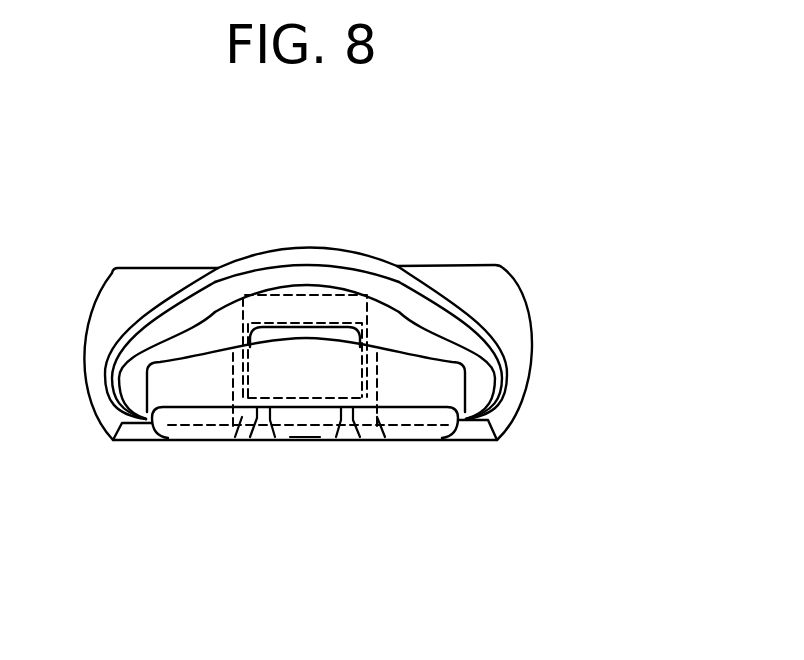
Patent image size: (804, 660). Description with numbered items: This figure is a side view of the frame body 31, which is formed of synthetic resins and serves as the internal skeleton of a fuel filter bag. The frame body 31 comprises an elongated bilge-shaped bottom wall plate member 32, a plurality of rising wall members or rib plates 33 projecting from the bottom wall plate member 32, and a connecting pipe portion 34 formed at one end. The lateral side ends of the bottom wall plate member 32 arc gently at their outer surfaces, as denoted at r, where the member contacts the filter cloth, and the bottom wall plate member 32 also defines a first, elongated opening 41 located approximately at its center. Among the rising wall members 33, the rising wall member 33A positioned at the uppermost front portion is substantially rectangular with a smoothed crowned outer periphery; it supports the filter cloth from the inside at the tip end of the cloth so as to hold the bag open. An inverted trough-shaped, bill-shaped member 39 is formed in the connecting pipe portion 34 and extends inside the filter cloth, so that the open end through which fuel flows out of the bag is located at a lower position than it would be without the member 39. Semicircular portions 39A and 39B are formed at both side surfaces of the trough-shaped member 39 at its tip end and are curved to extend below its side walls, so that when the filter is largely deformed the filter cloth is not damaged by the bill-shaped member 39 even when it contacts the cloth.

The frame body 31 is at (393, 265).
The bottom wall plate member 32 is at (185, 432).
The rising wall members 33 is at (230, 267).
The rising wall member 33A is at (437, 387).
The connecting pipe portion 34 is at (485, 280).
The inverted trough-shaped member 39 is at (303, 443).
The semicircular portion 39A is at (273, 443).
The semicircular portion 39B is at (345, 448).
The first elongated opening 41 is at (243, 433).
The gently arced lateral side end r is at (462, 440).